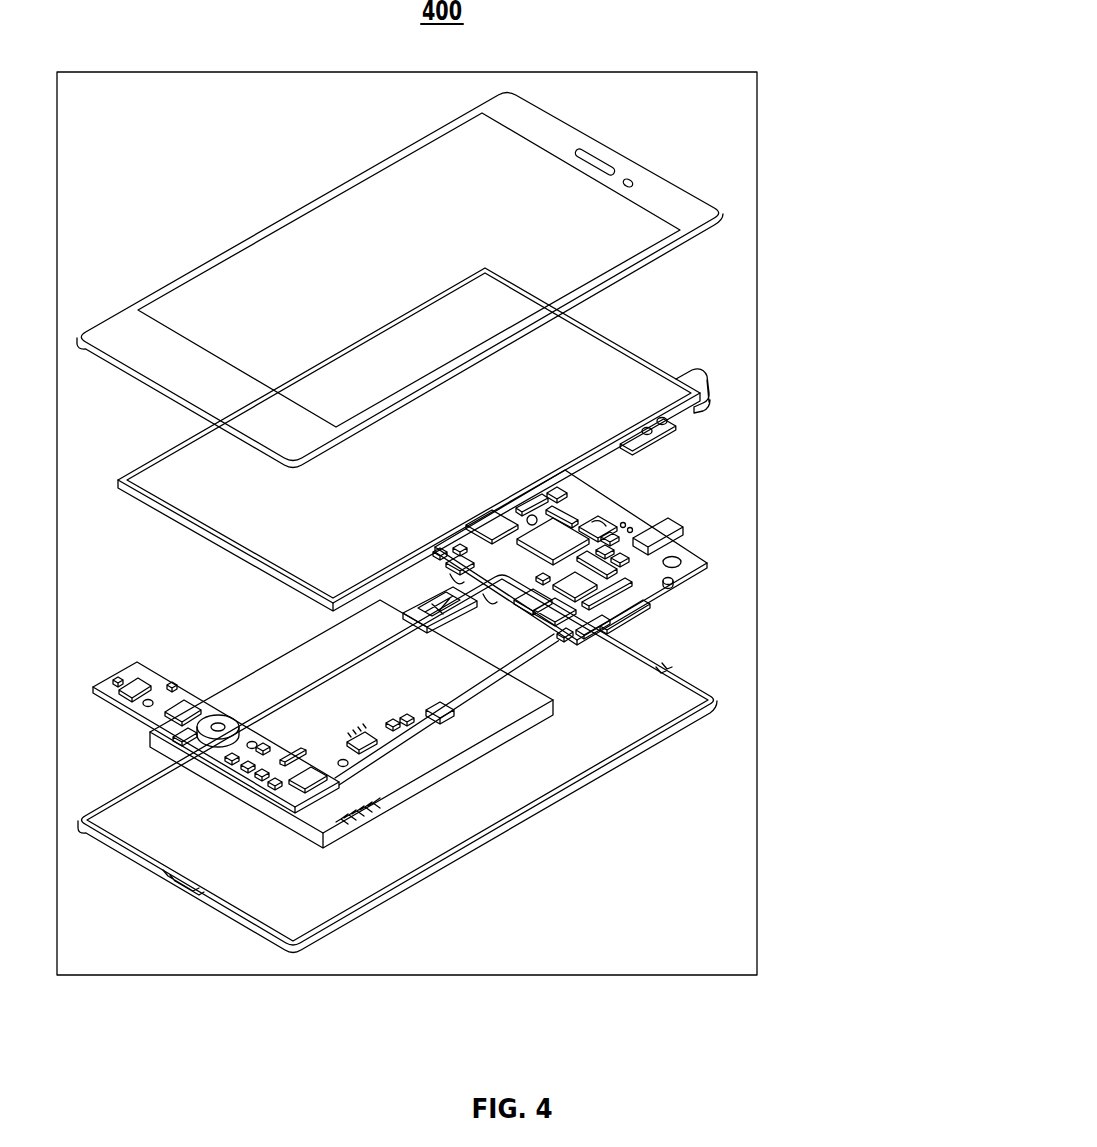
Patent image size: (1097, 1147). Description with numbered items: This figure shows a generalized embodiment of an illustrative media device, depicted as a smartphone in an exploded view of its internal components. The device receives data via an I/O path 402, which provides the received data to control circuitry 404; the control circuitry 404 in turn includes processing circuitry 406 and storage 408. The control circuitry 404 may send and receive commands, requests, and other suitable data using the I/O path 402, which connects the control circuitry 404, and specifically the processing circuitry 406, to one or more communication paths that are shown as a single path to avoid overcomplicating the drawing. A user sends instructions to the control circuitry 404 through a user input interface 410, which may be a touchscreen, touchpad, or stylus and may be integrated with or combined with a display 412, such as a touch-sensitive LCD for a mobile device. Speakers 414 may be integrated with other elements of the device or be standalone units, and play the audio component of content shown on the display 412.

The I/O path 402 is at (212, 746).
The control circuitry 404 is at (652, 614).
The processing circuitry 406 is at (568, 552).
The storage 408 is at (643, 571).
The user input interface 410 is at (641, 390).
The display 412 is at (686, 397).
The speakers 414 is at (608, 156).